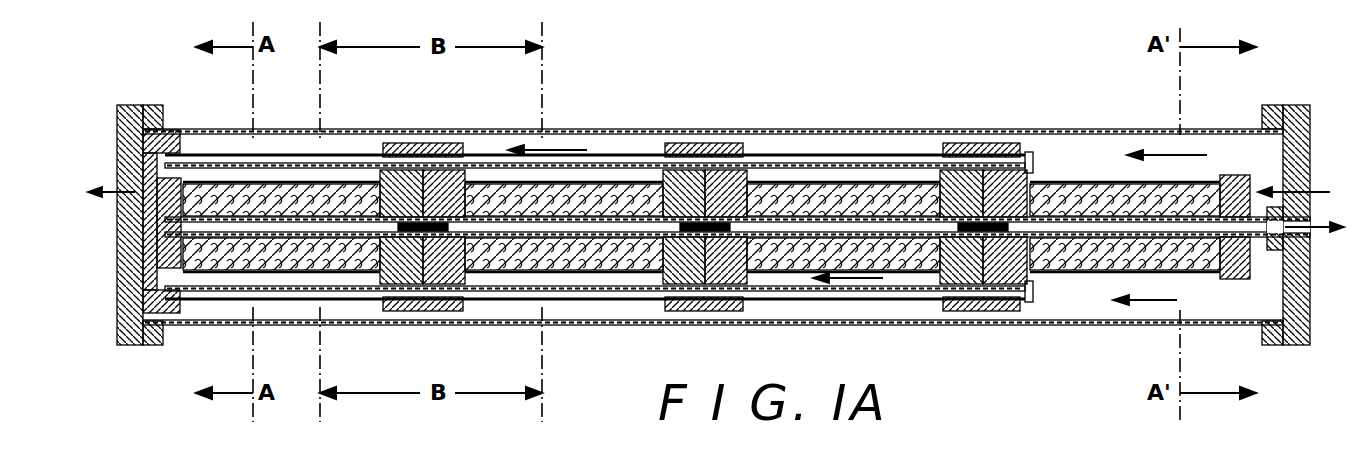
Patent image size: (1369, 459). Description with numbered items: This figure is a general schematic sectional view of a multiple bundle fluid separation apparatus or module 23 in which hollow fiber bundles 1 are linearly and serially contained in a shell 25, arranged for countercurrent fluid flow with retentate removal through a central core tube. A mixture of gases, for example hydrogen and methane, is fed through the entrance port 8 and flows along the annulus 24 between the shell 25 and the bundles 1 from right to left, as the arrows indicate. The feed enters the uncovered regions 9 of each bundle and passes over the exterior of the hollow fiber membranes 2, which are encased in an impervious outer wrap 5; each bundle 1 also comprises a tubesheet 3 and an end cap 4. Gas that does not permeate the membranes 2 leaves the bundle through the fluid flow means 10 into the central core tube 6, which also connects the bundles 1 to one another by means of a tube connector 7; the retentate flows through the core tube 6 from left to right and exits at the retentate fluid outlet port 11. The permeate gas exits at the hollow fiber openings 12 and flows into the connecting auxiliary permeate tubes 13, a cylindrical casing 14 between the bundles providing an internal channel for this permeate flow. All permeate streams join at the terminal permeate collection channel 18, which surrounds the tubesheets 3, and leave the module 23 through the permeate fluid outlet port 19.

The hollow fiber bundles 1 is at (570, 197).
The hollow fiber membranes 2 is at (250, 255).
The tubesheet 3 is at (143, 262).
The end cap 4 is at (375, 292).
The outer wrap 5 is at (273, 265).
The central core tube 6 is at (285, 183).
The tube connector 7 is at (410, 187).
The entrance port 8 is at (1312, 193).
The uncovered regions 9 is at (195, 185).
The fluid flow means 10 is at (358, 182).
The retentate fluid outlet port 11 is at (1310, 240).
The hollow fiber openings 12 is at (440, 187).
The auxiliary permeate tubes 13 is at (493, 187).
The cylindrical casing 14 is at (447, 147).
The permeate collection channel 18 is at (143, 160).
The permeate fluid outlet port 19 is at (122, 203).
The multiple bundle module 23 is at (1036, 128).
The annulus 24 is at (850, 140).
The shell 25 is at (936, 135).